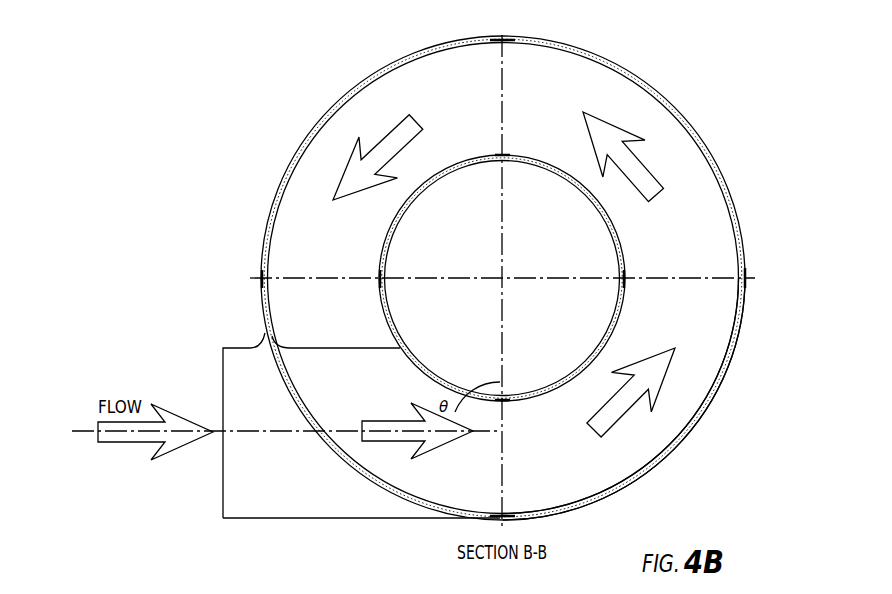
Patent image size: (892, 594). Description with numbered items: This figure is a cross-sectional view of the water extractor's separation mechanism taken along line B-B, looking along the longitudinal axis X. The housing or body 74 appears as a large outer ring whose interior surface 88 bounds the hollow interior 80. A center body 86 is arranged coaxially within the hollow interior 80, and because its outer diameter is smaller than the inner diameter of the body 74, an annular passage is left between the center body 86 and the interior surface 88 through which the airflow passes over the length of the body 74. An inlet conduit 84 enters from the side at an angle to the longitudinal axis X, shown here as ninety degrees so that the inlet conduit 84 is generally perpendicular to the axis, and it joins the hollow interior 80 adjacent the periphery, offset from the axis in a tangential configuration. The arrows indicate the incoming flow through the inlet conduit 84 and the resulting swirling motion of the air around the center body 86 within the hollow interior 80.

The body 74 is at (552, 40).
The hollow interior 80 is at (341, 260).
The inlet conduit 84 is at (242, 387).
The center body 86 is at (458, 157).
The interior surface 88 is at (694, 396).